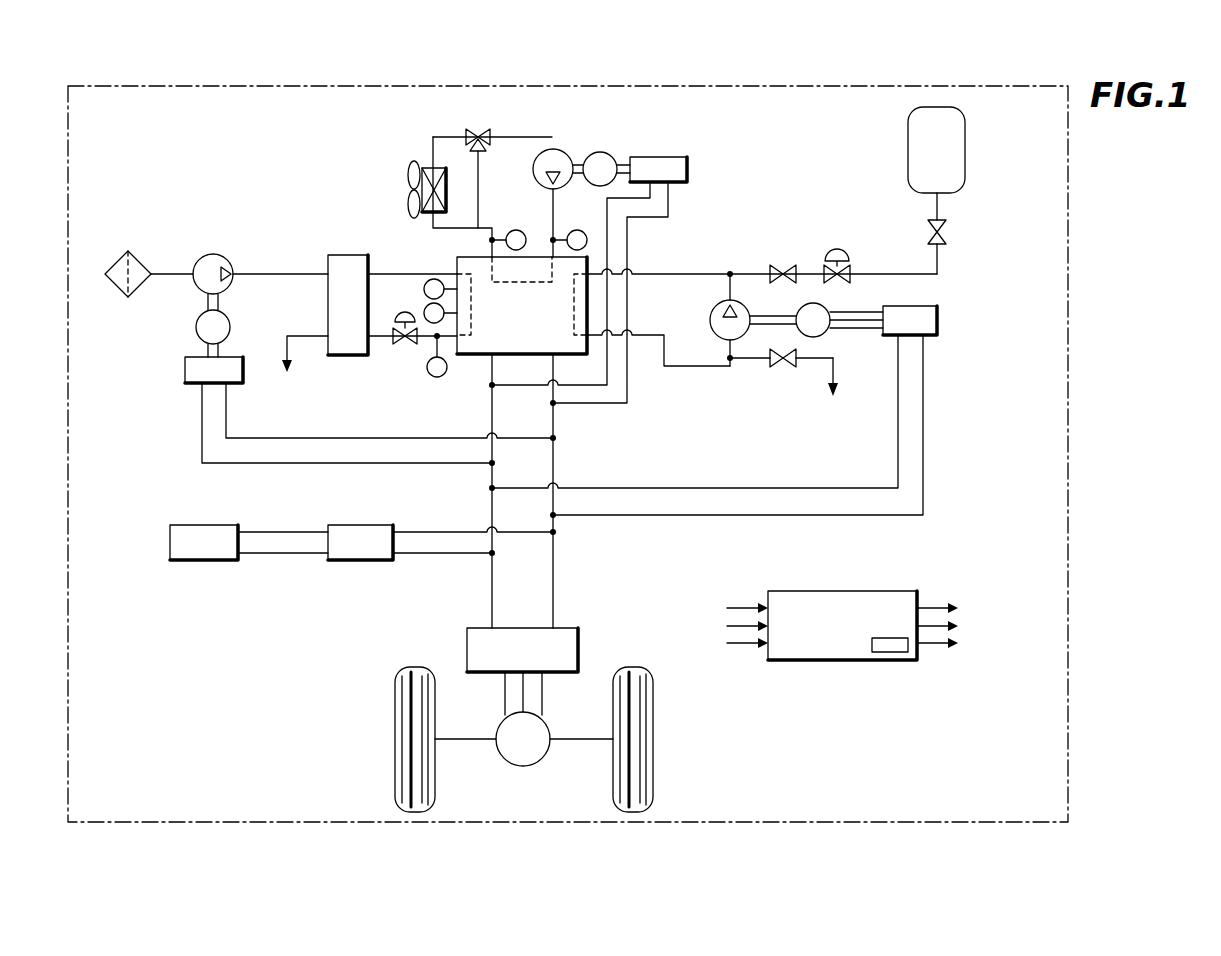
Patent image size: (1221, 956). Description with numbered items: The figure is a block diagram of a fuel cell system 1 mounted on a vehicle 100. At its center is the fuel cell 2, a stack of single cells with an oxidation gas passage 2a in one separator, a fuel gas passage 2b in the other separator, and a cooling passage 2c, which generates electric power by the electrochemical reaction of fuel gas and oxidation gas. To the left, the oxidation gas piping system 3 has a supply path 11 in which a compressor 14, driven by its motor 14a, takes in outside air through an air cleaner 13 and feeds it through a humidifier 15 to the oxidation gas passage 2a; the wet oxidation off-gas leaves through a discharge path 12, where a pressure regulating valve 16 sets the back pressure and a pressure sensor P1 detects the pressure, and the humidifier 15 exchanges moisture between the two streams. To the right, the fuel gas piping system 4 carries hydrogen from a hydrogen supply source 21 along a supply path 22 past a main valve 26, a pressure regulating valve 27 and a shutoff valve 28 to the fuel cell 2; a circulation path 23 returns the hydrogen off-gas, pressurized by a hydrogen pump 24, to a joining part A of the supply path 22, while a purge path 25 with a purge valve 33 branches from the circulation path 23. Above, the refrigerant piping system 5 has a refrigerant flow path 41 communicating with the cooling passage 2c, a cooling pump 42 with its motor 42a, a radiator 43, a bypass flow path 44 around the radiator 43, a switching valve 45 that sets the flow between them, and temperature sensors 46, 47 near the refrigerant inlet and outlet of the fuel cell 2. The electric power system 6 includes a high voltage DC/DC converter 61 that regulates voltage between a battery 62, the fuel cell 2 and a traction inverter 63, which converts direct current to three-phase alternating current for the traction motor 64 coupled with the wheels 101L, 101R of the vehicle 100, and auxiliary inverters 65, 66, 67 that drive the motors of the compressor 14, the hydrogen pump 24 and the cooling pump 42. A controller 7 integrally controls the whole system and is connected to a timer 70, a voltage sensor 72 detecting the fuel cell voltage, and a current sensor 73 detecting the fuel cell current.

The fuel cell system 1 is at (1068, 222).
The fuel cell 2 is at (463, 358).
The oxidation gas passage 2a is at (472, 320).
The fuel gas passage 2b is at (574, 294).
The cooling passage 2c is at (521, 284).
The oxidation gas piping system 3 is at (239, 245).
The fuel gas piping system 4 is at (798, 284).
The refrigerant piping system 5 is at (444, 184).
The electric power system 6 is at (550, 491).
The controller 7 is at (800, 662).
The supply path 11 is at (390, 275).
The discharge path 12 is at (312, 336).
The air cleaner 13 is at (140, 262).
The compressor 14 is at (213, 254).
The compressor motor 14a is at (196, 327).
The humidifier 15 is at (348, 355).
The pressure regulating valve 16 is at (400, 348).
The hydrogen supply source 21 is at (965, 148).
The supply path 22 is at (938, 257).
The circulation path 23 is at (705, 366).
The hydrogen pump 24 is at (713, 318).
The purge path 25 is at (838, 358).
The main valve 26 is at (946, 228).
The pressure regulating valve 27 is at (853, 268).
The shutoff valve 28 is at (783, 262).
The purge valve 33 is at (783, 368).
The refrigerant flow path 41 is at (525, 137).
The cooling pump 42 is at (565, 148).
The coolant pump motor 42a is at (610, 150).
The radiator 43 is at (408, 176).
The bypass flow path 44 is at (480, 187).
The switching valve 45 is at (472, 124).
The temperature sensor 46 is at (580, 228).
The temperature sensor 47 is at (520, 228).
The high voltage DC/DC converter 61 is at (360, 525).
The battery 62 is at (206, 525).
The traction inverter 63 is at (578, 636).
The traction motor 64 is at (548, 728).
The auxiliary inverter 65 is at (185, 370).
The auxiliary inverter 66 is at (937, 320).
The auxiliary inverter 67 is at (687, 168).
The timer 70 is at (888, 653).
The voltage sensor 72 is at (434, 279).
The current sensor 73 is at (424, 308).
The vehicle 100 is at (452, 750).
The wheel 101R is at (395, 730).
The wheel 101L is at (653, 725).
The pressure sensor P1 is at (432, 377).
The joining part A is at (733, 265).